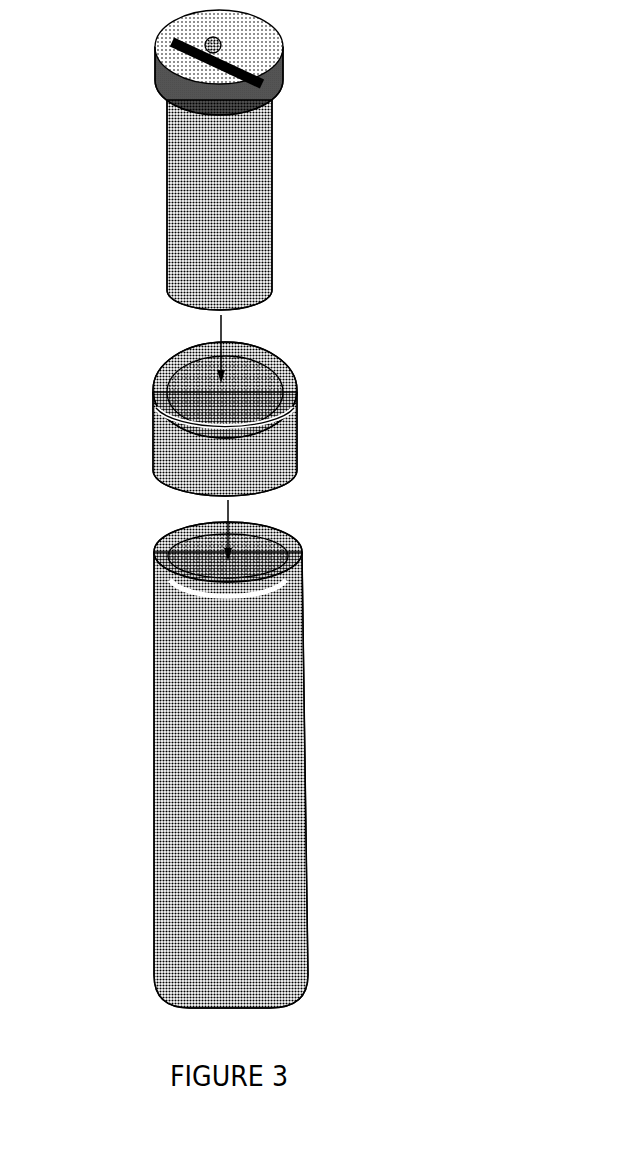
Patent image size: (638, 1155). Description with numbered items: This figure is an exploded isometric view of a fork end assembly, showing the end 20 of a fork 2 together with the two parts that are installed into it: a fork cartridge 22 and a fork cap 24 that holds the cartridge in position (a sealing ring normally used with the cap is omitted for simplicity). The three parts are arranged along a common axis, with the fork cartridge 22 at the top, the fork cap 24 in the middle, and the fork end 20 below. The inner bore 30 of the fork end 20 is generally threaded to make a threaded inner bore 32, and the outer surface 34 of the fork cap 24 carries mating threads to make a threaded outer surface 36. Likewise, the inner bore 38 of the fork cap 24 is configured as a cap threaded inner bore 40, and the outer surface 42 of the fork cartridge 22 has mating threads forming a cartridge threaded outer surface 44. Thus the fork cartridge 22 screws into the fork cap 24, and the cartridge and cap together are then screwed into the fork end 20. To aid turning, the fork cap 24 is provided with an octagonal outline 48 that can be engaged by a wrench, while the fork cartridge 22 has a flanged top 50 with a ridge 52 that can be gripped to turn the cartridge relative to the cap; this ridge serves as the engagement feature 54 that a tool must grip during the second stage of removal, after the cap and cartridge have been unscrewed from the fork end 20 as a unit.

The fork 2 is at (221, 754).
The fork end 20 is at (219, 754).
The fork cartridge 22 is at (219, 191).
The fork cap 24 is at (255, 423).
The inner bore 30 is at (271, 548).
The threaded inner bore 32 is at (252, 573).
The outer surface 34 is at (306, 440).
The threaded outer surface 36 is at (277, 453).
The inner bore 38 is at (282, 379).
The cap threaded inner bore 40 is at (262, 380).
The outer surface 42 is at (287, 205).
The cartridge threaded outer surface 44 is at (262, 235).
The octagonal outline 48 is at (165, 413).
The flanged top 50 is at (284, 57).
The ridge 52 is at (264, 42).
The engagement feature 54 is at (274, 45).